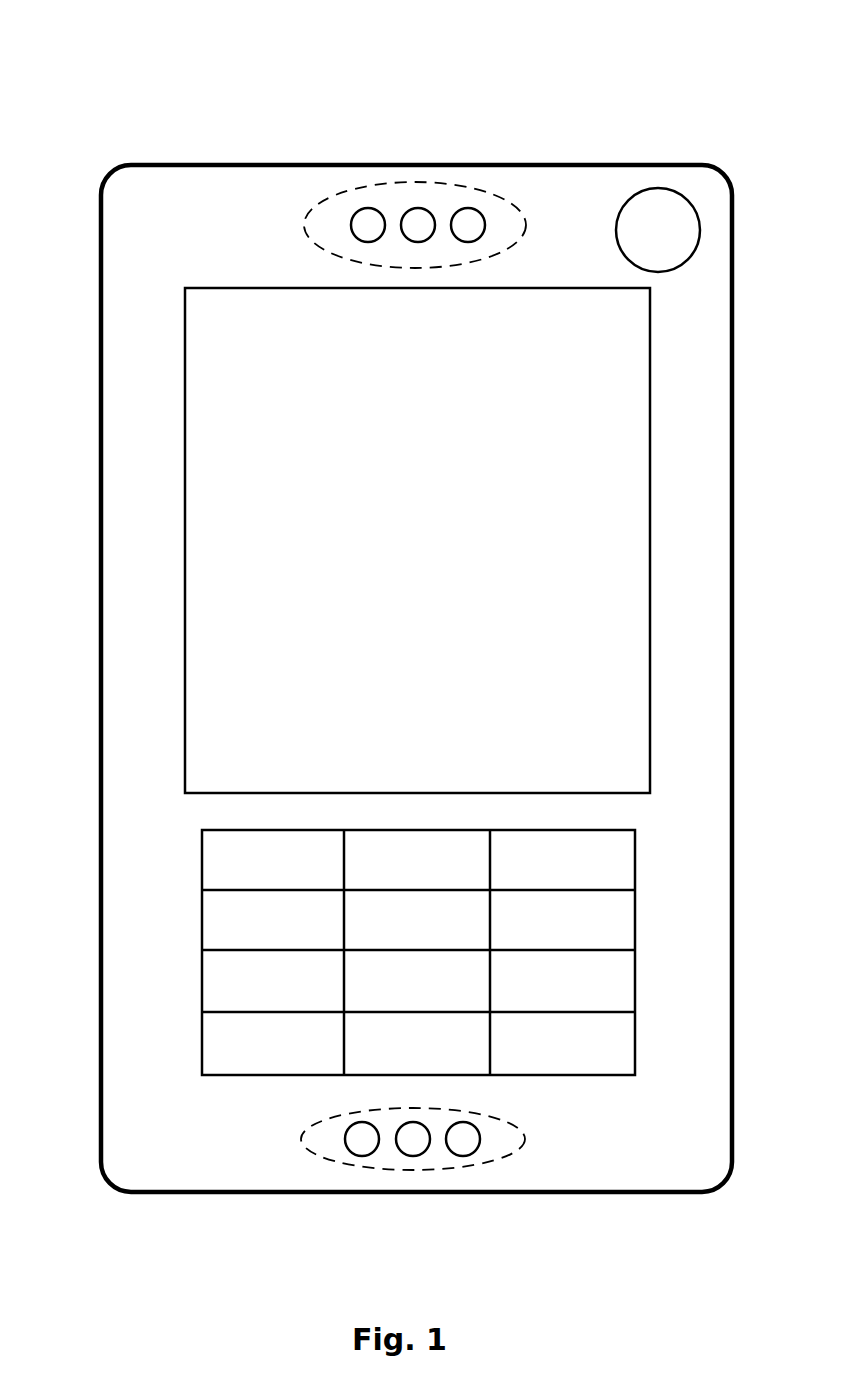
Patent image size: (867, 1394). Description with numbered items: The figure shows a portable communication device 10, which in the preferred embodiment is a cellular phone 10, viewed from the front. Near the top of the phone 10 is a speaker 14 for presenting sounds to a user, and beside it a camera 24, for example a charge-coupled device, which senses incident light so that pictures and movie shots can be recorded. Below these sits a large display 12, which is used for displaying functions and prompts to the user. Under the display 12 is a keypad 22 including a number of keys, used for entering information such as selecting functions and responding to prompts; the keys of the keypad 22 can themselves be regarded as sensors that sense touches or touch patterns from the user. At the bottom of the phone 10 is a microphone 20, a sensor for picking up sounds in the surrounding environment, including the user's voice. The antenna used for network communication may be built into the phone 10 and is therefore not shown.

The portable communication device 10 is at (163, 100).
The display 12 is at (200, 363).
The speaker 14 is at (367, 186).
The microphone 20 is at (333, 1162).
The keypad 22 is at (225, 868).
The camera 24 is at (646, 203).